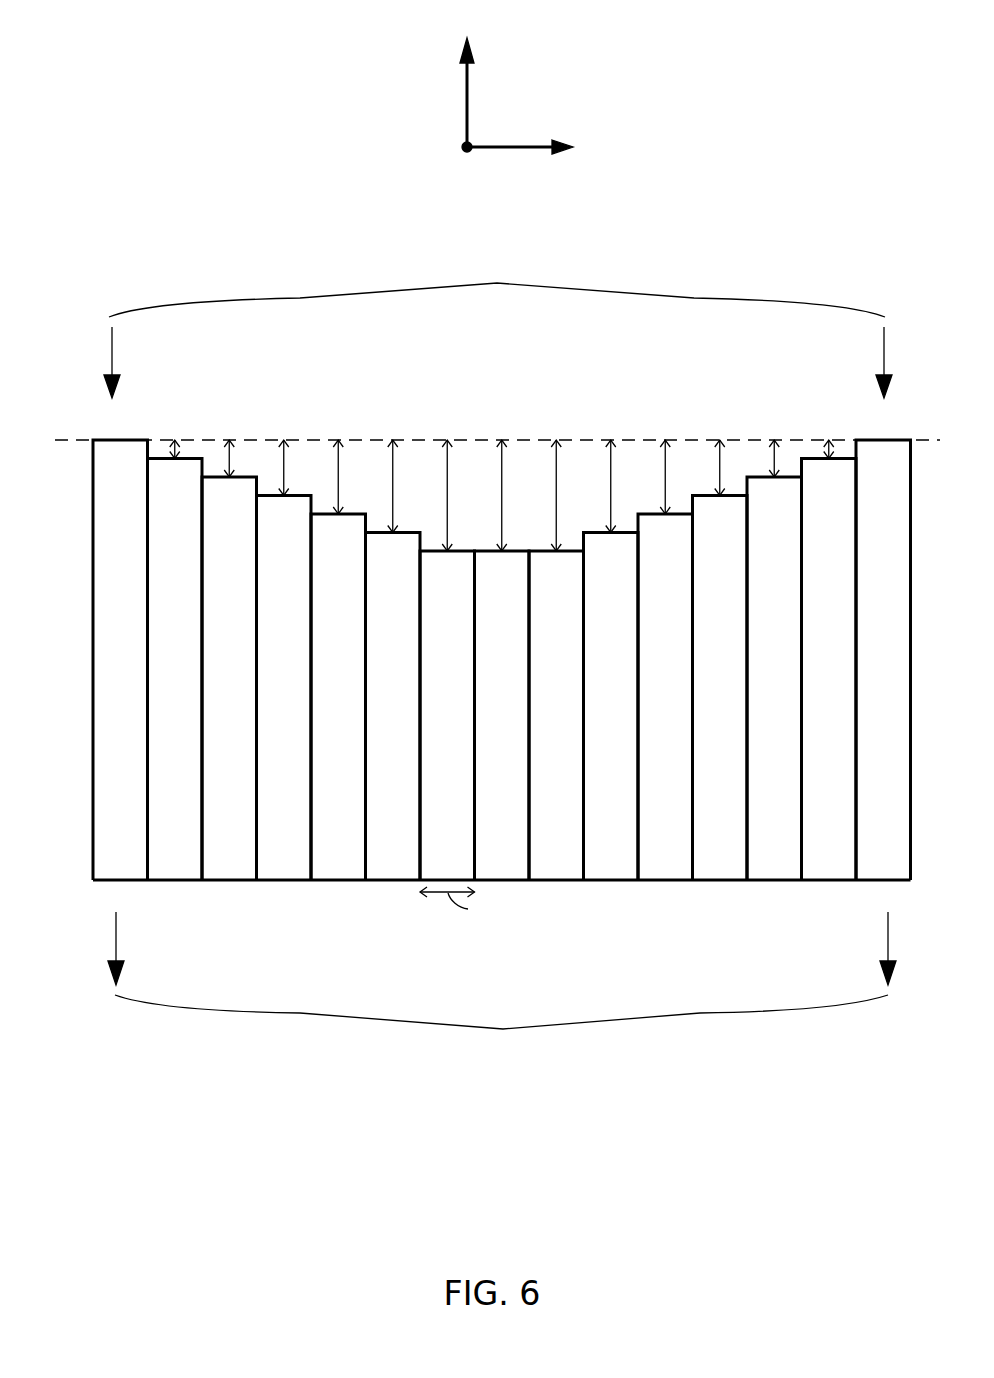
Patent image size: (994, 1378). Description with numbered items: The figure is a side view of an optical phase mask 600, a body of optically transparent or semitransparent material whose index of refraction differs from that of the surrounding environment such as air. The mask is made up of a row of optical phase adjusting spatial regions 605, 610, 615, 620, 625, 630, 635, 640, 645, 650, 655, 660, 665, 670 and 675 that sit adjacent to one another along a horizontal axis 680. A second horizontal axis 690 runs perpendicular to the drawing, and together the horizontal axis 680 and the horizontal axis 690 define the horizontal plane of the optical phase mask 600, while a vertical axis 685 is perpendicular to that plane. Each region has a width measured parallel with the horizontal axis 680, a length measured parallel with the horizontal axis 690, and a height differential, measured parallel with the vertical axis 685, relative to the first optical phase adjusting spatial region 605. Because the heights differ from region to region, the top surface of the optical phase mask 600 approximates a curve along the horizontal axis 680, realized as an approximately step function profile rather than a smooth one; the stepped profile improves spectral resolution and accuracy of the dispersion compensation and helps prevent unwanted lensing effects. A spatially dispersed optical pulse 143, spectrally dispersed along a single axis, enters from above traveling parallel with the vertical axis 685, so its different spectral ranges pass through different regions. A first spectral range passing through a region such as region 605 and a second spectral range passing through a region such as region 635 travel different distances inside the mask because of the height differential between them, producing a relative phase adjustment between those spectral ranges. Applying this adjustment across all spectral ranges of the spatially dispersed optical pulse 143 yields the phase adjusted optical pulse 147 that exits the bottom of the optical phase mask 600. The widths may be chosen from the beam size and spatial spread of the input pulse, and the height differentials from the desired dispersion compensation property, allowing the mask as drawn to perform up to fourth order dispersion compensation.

The optical phase mask 600 is at (66, 65).
The optical phase adjusting spatial region 605 is at (132, 636).
The optical phase adjusting spatial region 610 is at (187, 636).
The optical phase adjusting spatial region 615 is at (241, 636).
The optical phase adjusting spatial region 620 is at (296, 636).
The optical phase adjusting spatial region 625 is at (350, 636).
The optical phase adjusting spatial region 630 is at (405, 636).
The optical phase adjusting spatial region 635 is at (459, 636).
The optical phase adjusting spatial region 640 is at (514, 636).
The optical phase adjusting spatial region 645 is at (568, 636).
The optical phase adjusting spatial region 650 is at (623, 636).
The optical phase adjusting spatial region 655 is at (677, 636).
The optical phase adjusting spatial region 660 is at (732, 636).
The thirteenth waveguide segment 665 is at (786, 636).
The optical phase adjusting spatial region 670 is at (841, 636).
The optical phase adjusting spatial region 675 is at (895, 636).
The horizontal axis 680 is at (514, 150).
The vertical axis 685 is at (467, 86).
The horizontal axis 690 is at (465, 151).
The spatially dispersed optical pulse 143 is at (498, 327).
The phase adjusted optical pulse 147 is at (502, 986).